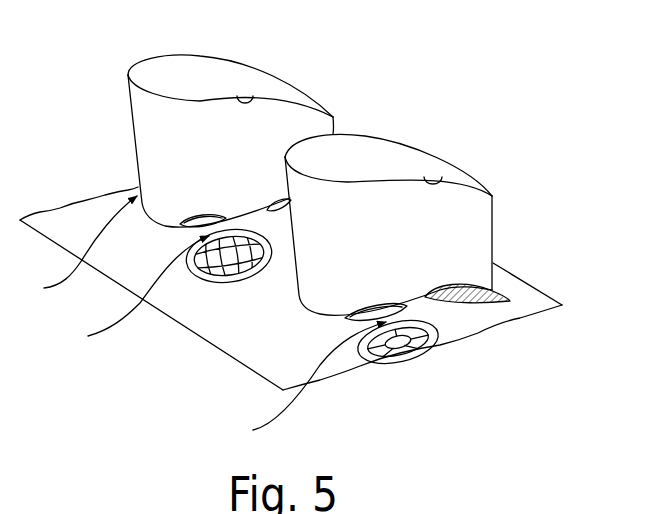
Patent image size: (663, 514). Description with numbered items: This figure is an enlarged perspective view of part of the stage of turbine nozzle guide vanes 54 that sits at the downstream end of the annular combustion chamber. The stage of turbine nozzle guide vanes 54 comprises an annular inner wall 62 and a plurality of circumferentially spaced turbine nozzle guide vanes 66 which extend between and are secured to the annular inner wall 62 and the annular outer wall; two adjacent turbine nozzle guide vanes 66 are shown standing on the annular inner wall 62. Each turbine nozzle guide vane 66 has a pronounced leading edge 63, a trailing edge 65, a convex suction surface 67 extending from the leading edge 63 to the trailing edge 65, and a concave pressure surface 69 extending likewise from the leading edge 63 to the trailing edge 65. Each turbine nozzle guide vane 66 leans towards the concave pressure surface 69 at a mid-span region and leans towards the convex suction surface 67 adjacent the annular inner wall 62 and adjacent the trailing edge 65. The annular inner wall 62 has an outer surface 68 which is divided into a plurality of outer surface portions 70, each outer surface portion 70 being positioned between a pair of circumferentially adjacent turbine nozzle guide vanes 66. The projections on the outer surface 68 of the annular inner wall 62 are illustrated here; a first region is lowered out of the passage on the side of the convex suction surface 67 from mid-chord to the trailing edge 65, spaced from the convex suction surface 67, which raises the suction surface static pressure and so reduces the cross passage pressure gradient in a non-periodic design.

The stage of turbine nozzle guide vanes 54 is at (163, 324).
The annular inner wall 62 is at (117, 259).
The leading edge 63 is at (130, 98).
The trailing edge 65 is at (333, 128).
The turbine nozzle guide vane 66 is at (158, 141).
The convex suction surface 67 is at (210, 60).
The outer surface 68 is at (248, 285).
The concave pressure surface 69 is at (250, 95).
The outer surface portion 70 is at (203, 320).